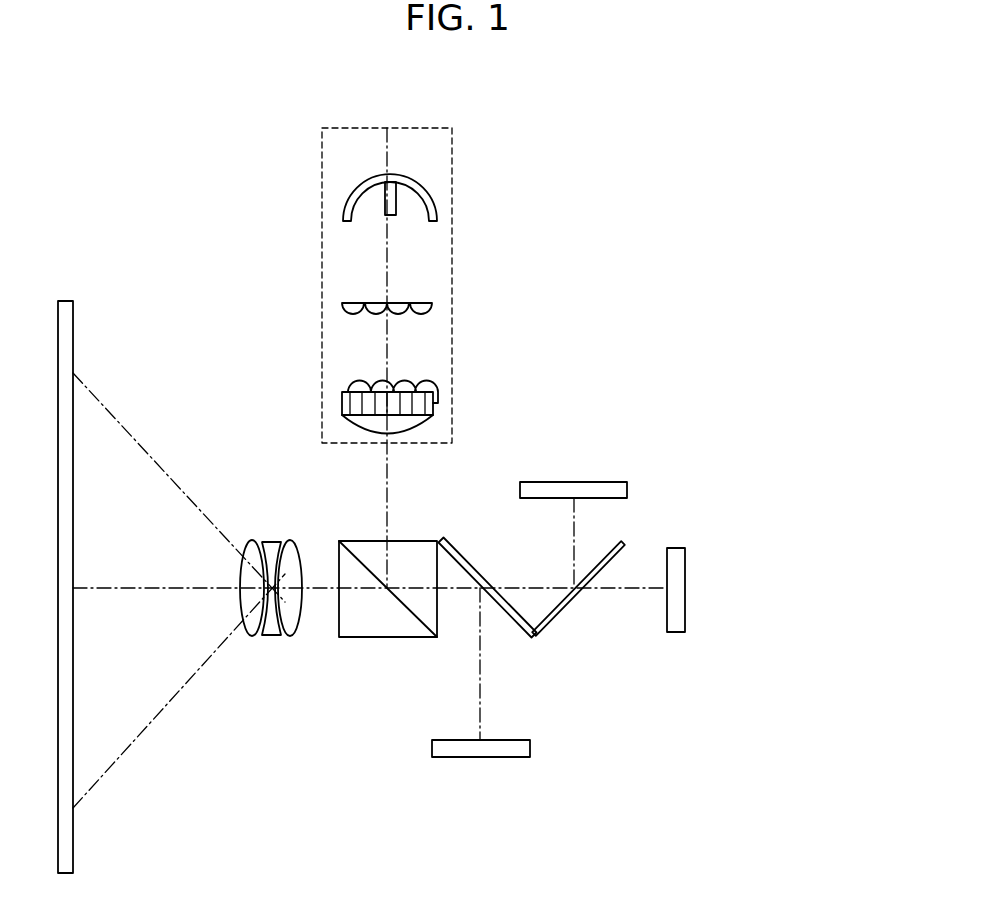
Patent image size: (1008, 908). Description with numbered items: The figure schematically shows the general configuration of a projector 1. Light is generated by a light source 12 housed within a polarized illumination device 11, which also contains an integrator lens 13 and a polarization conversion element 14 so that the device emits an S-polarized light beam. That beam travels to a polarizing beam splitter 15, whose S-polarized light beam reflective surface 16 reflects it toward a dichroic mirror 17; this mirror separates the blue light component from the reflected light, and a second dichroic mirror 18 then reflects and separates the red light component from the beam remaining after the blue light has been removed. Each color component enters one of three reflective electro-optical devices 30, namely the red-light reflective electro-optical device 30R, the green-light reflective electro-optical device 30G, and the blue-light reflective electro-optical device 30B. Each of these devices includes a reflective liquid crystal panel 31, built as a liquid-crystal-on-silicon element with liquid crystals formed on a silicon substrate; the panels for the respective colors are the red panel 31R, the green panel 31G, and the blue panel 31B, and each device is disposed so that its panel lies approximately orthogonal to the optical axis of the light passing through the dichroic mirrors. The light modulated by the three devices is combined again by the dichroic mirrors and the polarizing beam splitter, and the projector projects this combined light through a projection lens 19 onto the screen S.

The projector 1 is at (673, 212).
The screen S is at (63, 838).
The polarized illumination device 11 is at (452, 157).
The light source 12 is at (424, 190).
The integrator lens 13 is at (426, 303).
The polarization conversion element 14 is at (434, 407).
The polarizing beam splitter 15 is at (355, 628).
The S-polarized light beam reflective surface 16 is at (420, 625).
The dichroic mirror 17 is at (510, 615).
The dichroic mirror 18 is at (558, 615).
The projection lens 19 is at (302, 537).
The red-light reflective electro-optical device 30R is at (632, 487).
The green-light reflective electro-optical device 30G is at (688, 592).
The blue-light reflective electro-optical device 30B is at (540, 746).
The reflective electro-optical device 30 is at (760, 785).
The red-light reflective liquid crystal panel 31R is at (530, 495).
The blue-light reflective liquid crystal panel 31B is at (450, 752).
The green-light reflective liquid crystal panel 31G is at (673, 628).
The reflective liquid crystal panel 31 is at (545, 843).